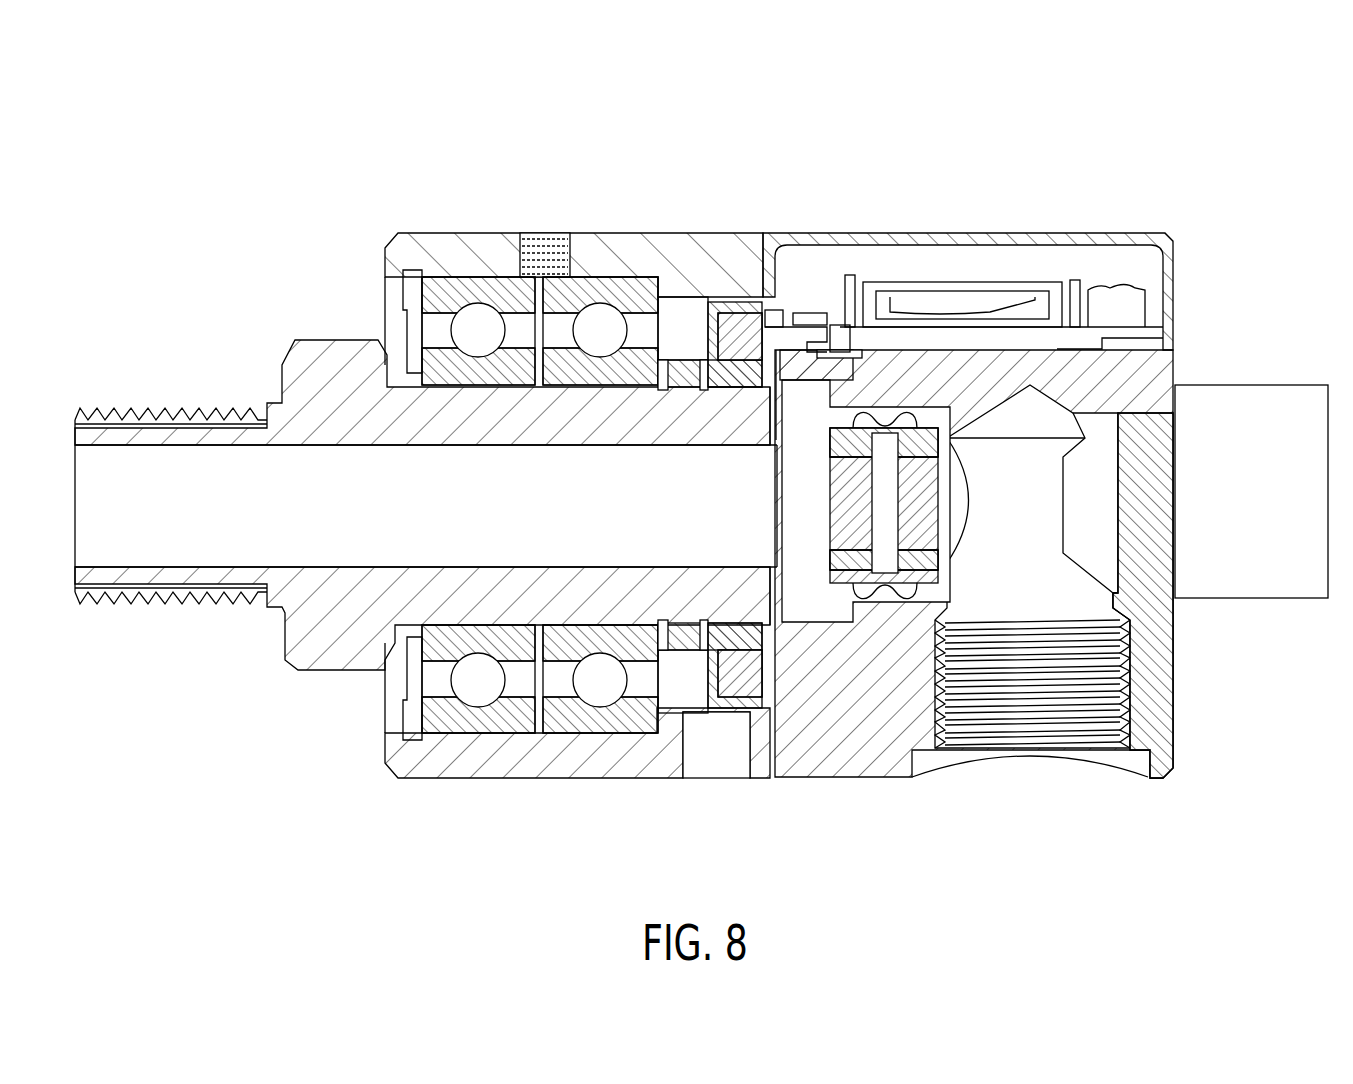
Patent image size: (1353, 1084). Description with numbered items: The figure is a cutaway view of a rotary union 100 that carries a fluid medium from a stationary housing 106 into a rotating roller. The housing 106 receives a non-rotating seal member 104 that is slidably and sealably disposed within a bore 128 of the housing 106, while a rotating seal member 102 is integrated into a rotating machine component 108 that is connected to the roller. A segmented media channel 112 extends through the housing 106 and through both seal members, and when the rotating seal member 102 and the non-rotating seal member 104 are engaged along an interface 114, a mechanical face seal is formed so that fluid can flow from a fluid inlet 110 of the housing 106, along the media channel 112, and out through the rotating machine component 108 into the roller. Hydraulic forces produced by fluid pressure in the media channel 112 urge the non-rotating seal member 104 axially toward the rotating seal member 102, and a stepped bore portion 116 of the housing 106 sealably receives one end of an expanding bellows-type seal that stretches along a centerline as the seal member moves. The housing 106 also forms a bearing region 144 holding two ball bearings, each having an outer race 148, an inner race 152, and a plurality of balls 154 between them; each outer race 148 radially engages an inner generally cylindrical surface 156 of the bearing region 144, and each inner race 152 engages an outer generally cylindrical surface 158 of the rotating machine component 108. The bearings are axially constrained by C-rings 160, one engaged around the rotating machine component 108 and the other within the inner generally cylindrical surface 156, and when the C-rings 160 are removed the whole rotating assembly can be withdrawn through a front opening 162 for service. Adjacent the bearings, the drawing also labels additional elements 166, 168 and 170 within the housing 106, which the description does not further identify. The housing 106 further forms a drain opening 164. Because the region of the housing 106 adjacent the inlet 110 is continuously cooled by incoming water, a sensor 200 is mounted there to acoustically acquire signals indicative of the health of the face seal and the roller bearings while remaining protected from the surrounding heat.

The rotary union 100 is at (701, 458).
The rotating seal member 102 is at (808, 598).
The non-rotating seal member 104 is at (880, 700).
The housing 106 is at (905, 705).
The rotating machine component 108 is at (312, 645).
The fluid inlet 110 is at (1053, 770).
The media channel 112 is at (153, 522).
The interface 114 is at (765, 421).
The stepped bore portion 116 is at (413, 684).
The bore 128 is at (820, 380).
The bearing region 144 is at (529, 180).
The outer race 148 is at (572, 287).
The inner race 152 is at (520, 360).
The balls 154 is at (602, 322).
The inner generally cylindrical surface 156 is at (440, 287).
The outer generally cylindrical surface 158 is at (567, 645).
The C-rings 160 is at (414, 744).
The front opening 162 is at (358, 311).
The drain opening 164 is at (721, 752).
The seal 166 is at (742, 360).
The seal ring 168 is at (738, 312).
The retaining ring 170 is at (402, 383).
The sensor 200 is at (1268, 506).